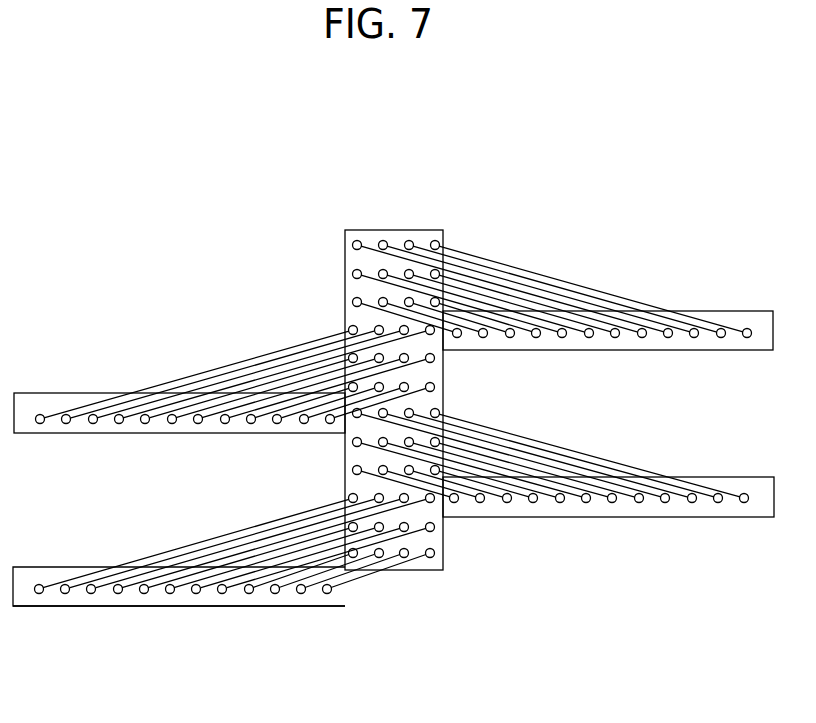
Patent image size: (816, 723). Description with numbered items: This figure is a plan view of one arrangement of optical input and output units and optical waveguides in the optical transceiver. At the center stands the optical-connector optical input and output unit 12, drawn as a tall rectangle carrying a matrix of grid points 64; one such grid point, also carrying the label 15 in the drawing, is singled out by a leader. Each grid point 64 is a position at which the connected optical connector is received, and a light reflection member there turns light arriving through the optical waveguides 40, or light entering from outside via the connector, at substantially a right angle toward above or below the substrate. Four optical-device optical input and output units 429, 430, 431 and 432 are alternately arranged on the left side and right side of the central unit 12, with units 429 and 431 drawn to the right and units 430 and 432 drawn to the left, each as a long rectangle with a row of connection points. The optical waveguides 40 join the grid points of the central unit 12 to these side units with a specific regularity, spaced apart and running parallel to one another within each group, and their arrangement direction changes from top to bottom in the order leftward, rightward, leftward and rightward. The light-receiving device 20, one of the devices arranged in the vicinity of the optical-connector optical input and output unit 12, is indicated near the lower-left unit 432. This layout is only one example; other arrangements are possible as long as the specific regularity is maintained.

The optical-connector optical input and output unit 12 is at (345, 257).
The contact pad 15 is at (297, 305).
The grid points 64 is at (352, 302).
The optical waveguides 40 is at (210, 372).
The light-receiving device 20 is at (200, 600).
The optical-device optical input and output unit 429 is at (742, 311).
The optical-device optical input and output unit 430 is at (45, 393).
The optical-device optical input and output unit 431 is at (737, 477).
The optical-device optical input and output unit 432 is at (50, 567).